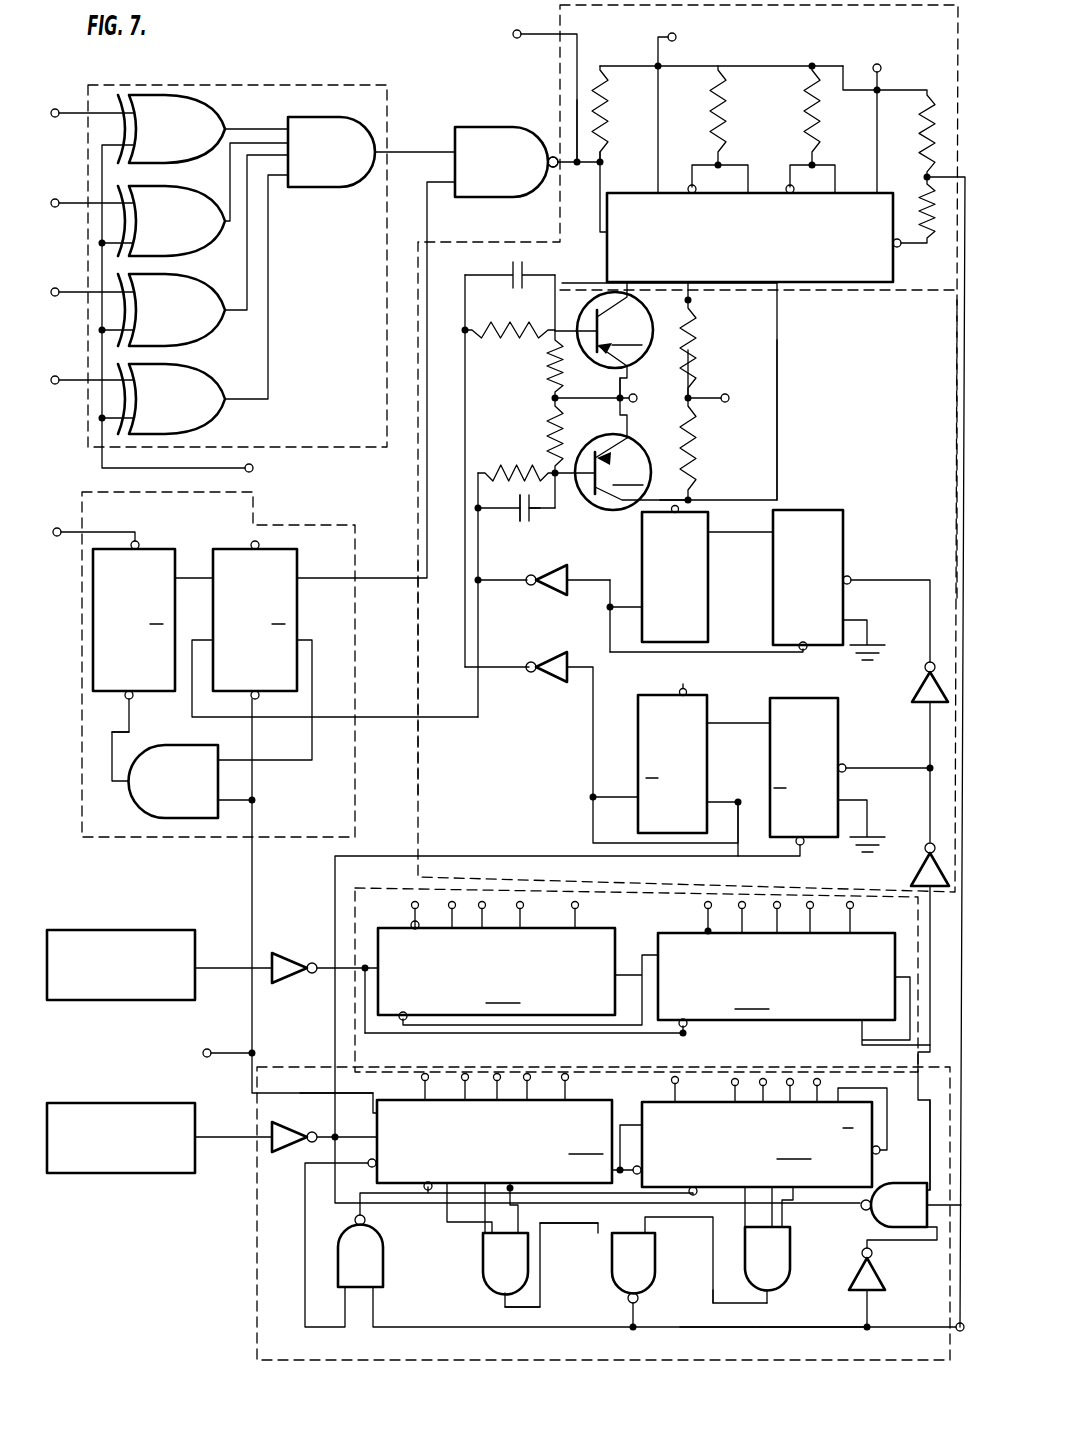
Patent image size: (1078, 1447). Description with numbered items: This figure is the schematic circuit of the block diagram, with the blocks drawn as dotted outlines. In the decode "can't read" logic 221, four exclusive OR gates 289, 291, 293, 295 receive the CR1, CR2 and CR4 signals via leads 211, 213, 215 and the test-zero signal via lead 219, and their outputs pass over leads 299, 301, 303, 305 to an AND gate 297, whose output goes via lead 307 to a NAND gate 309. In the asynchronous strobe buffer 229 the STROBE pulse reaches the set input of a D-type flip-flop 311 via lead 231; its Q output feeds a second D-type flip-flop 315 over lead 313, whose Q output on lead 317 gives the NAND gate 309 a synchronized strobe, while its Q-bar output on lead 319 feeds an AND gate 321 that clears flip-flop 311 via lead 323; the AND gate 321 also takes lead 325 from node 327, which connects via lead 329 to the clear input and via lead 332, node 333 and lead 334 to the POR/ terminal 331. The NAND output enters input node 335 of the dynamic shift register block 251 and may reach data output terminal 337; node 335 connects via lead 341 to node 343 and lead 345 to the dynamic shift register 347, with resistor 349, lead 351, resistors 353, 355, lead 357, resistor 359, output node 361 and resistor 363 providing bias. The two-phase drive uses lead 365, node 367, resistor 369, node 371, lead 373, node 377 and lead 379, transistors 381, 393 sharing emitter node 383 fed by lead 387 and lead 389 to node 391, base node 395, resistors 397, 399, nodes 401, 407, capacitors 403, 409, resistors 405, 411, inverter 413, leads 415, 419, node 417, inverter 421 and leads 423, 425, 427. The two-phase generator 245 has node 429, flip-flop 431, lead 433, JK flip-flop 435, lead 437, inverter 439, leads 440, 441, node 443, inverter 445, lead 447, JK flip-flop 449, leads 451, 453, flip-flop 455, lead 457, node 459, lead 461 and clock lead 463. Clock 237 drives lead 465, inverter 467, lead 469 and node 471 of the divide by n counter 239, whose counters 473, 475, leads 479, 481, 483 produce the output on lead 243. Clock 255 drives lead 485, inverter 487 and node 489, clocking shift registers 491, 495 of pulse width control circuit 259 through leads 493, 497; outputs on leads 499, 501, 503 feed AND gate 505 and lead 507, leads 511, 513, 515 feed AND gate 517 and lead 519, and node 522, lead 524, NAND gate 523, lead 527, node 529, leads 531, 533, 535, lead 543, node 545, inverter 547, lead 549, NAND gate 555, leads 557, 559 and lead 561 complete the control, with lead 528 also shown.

The lead 211 is at (103, 100).
The lead 213 is at (74, 216).
The lead 215 is at (75, 300).
The lead 219 is at (90, 464).
The decode "can't read" logic block 221 is at (280, 84).
The asynchronous strobe buffer block 229 is at (255, 518).
The lead 231 is at (59, 526).
The clock #1 237 is at (84, 930).
The divide by "n" counter means block 239 is at (380, 886).
The lead 243 is at (930, 929).
The two-phase generator block 245 is at (417, 593).
The dynamic shift register block 251 is at (556, 12).
The clock block 255 is at (88, 1103).
The pulse width control circuit block 259 is at (253, 1239).
The exclusive OR gate 289 is at (165, 95).
The exclusive OR gate 291 is at (183, 190).
The exclusive OR gate 293 is at (183, 280).
The exclusive OR gate 295 is at (192, 371).
The AND gate 297 is at (350, 116).
The lead 299 is at (233, 127).
The lead 301 is at (259, 135).
The lead 303 is at (268, 233).
The lead 305 is at (269, 251).
The lead 307 is at (426, 150).
The NAND gate 309 is at (486, 128).
The D-type flip-flop 311 is at (93, 640).
The lead 313 is at (196, 578).
The D-type flip-flop 315 is at (283, 549).
The lead 317 is at (432, 207).
The lead 319 is at (312, 660).
The AND gate 321 is at (179, 745).
The lead 323 is at (112, 742).
The lead 325 is at (222, 822).
The node 327 is at (257, 801).
The lead 329 is at (250, 745).
The POR/ input terminal 331 is at (207, 1057).
The lead 332 is at (251, 1044).
The node 333 is at (252, 1054).
The lead 334 is at (545, 171).
The input node 335 is at (565, 158).
The data output terminal 337 is at (512, 37).
The lead 341 is at (572, 196).
The node 343 is at (602, 166).
The lead 345 is at (601, 237).
The dynamic shift register 347 is at (794, 285).
The resistor 349 is at (605, 125).
The lead 351 is at (721, 108).
The resistor 353 is at (727, 132).
The resistor 355 is at (817, 146).
The lead 357 is at (874, 114).
The resistor 359 is at (928, 125).
The output node 361 is at (925, 178).
The resistor 363 is at (926, 241).
The lead 365 is at (692, 304).
The node 367 is at (700, 335).
The resistor 369 is at (709, 372).
The node 371 is at (695, 420).
The lead 373 is at (728, 396).
The node 377 is at (690, 500).
The lead 379 is at (780, 345).
The transistor 381 is at (604, 340).
The node 383 is at (631, 414).
The lead 387 is at (621, 394).
The lead 389 is at (612, 406).
The node 391 is at (553, 399).
The transistor 393 is at (621, 472).
The base node 395 is at (543, 511).
The resistor 397 is at (557, 384).
The resistor 399 is at (550, 437).
The node 401 is at (465, 334).
The capacitor 403 is at (518, 277).
The resistor 405 is at (486, 342).
The node 407 is at (478, 508).
The capacitor 409 is at (541, 571).
The resistor 411 is at (496, 471).
The inverter 413 is at (532, 686).
The lead 415 is at (465, 640).
The node 417 is at (481, 580).
The lead 419 is at (479, 581).
The inverter 421 is at (566, 575).
The lead 423 is at (506, 580).
The lead 425 is at (408, 717).
The lead 427 is at (598, 580).
The Q-bar output node 429 is at (609, 606).
The D-type flip-flop 431 is at (642, 533).
The lead 433 is at (625, 653).
The JK flip-flop 435 is at (806, 511).
The lead 437 is at (742, 533).
The inverter 439 is at (919, 676).
The lead 440 is at (929, 718).
The lead 441 is at (890, 580).
The node 443 is at (923, 768).
The inverter 445 is at (922, 870).
The lead 447 is at (928, 806).
The JK flip-flop 449 is at (784, 698).
The lead 451 is at (865, 767).
The lead 453 is at (712, 698).
The D-type flip-flop 455 is at (682, 692).
The lead 457 is at (770, 858).
The Q-bar output node 459 is at (591, 797).
The lead 461 is at (596, 713).
The lead 463 is at (475, 856).
The lead 465 is at (222, 967).
The inverter 467 is at (291, 953).
The lead 469 is at (297, 983).
The clock input node 471 is at (362, 969).
The four bit binary counter 473 is at (496, 971).
The four bit binary counter 475 is at (794, 974).
The lead 479 is at (486, 1045).
The lead 481 is at (630, 959).
The lead 483 is at (693, 1041).
The lead 485 is at (225, 1140).
The inverter 487 is at (288, 1156).
The clock input node 489 is at (316, 1137).
The four bit shift register 491 is at (490, 1141).
The lead 493 is at (339, 1093).
The four bit shift register 495 is at (742, 1133).
The lead 497 is at (323, 1251).
The lead 499 is at (471, 1223).
The lead 501 is at (483, 1240).
The lead 503 is at (541, 1229).
The AND gate 505 is at (485, 1264).
The lead 507 is at (554, 1297).
The lead 511 is at (707, 1262).
The lead 513 is at (710, 1297).
The lead 515 is at (777, 1220).
The AND gate 517 is at (780, 1272).
The lead 519 is at (767, 1303).
The output node 522 is at (636, 1332).
The NAND gate 523 is at (375, 1206).
The lead 524 is at (439, 1302).
The lead 527 is at (304, 1241).
The connecting line 528 is at (423, 1318).
The node 529 is at (375, 1089).
The lead 531 is at (411, 1090).
The lead 533 is at (448, 1090).
The lead 535 is at (648, 1221).
The lead 543 is at (710, 1330).
The node 545 is at (867, 1330).
The inverter 547 is at (881, 1274).
The lead 549 is at (898, 1247).
The NAND gate 555 is at (893, 1185).
The lead 557 is at (932, 1110).
The lead 559 is at (955, 426).
The lead 561 is at (857, 1209).